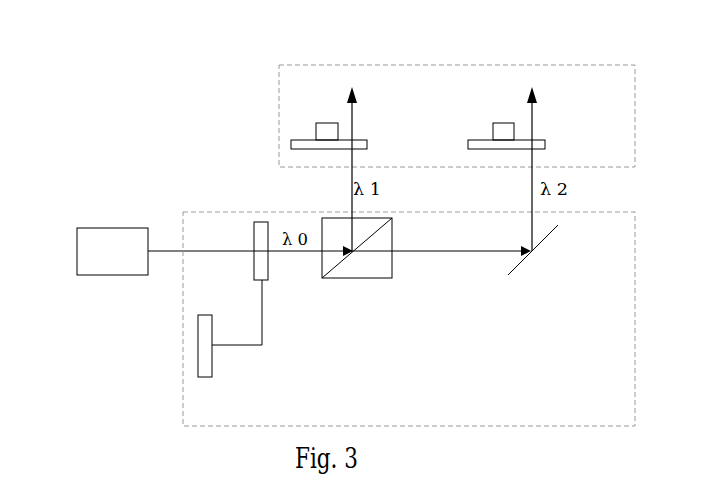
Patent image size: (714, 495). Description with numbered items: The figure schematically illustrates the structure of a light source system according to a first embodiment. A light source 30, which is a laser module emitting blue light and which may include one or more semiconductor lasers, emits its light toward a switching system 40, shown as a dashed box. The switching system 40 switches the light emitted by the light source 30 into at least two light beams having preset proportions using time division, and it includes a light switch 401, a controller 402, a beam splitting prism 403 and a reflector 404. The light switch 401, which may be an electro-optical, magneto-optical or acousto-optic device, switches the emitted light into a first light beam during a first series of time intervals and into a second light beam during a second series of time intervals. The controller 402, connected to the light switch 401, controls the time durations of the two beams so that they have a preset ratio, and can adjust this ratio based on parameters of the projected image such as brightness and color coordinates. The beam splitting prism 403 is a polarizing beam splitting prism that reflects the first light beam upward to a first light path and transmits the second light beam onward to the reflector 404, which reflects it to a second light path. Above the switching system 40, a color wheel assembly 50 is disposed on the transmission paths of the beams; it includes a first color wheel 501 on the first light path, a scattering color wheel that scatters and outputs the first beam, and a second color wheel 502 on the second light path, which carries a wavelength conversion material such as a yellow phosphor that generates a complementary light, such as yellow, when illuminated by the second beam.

The light source 30 is at (110, 229).
The switching system 40 is at (186, 211).
The color wheel assembly 50 is at (290, 65).
The light switch 401 is at (267, 281).
The controller 402 is at (207, 359).
The beam splitting prism 403 is at (362, 279).
The reflector 404 is at (522, 262).
The first color wheel 501 is at (360, 142).
The second color wheel 502 is at (542, 142).